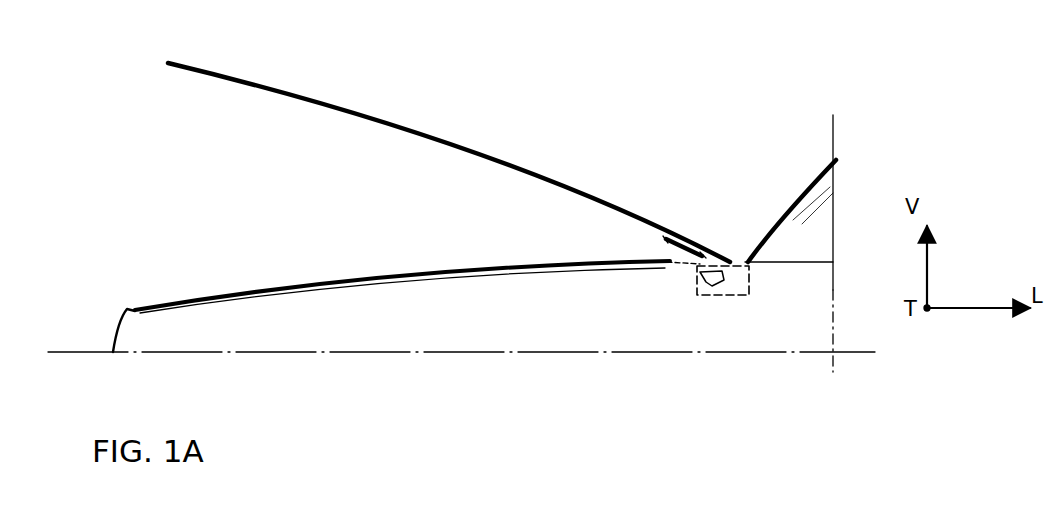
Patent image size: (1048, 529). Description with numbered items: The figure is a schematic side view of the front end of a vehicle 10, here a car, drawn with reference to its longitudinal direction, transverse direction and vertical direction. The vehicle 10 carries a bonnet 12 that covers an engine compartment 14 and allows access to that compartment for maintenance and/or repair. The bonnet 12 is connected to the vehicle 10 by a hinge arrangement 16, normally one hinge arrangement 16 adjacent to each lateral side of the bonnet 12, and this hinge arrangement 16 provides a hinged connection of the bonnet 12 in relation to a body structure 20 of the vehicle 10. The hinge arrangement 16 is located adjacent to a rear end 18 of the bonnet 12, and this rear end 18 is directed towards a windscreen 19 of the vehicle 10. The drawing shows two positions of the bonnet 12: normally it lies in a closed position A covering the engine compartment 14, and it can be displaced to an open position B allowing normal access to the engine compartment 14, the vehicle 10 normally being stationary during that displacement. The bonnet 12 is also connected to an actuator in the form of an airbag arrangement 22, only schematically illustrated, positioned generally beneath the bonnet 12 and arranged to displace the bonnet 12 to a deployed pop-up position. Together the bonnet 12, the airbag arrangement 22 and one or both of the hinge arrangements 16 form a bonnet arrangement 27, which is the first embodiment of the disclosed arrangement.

The vehicle 10 is at (97, 187).
The bonnet 12 is at (294, 88).
The engine compartment 14 is at (395, 308).
The hinge arrangement 16 is at (712, 274).
The rear end 18 is at (737, 240).
The windscreen 19 is at (813, 184).
The body structure 20 is at (499, 316).
The airbag arrangement 22 is at (750, 284).
The bonnet arrangement 27 is at (649, 157).
The closed position A is at (452, 256).
The open position B is at (412, 125).